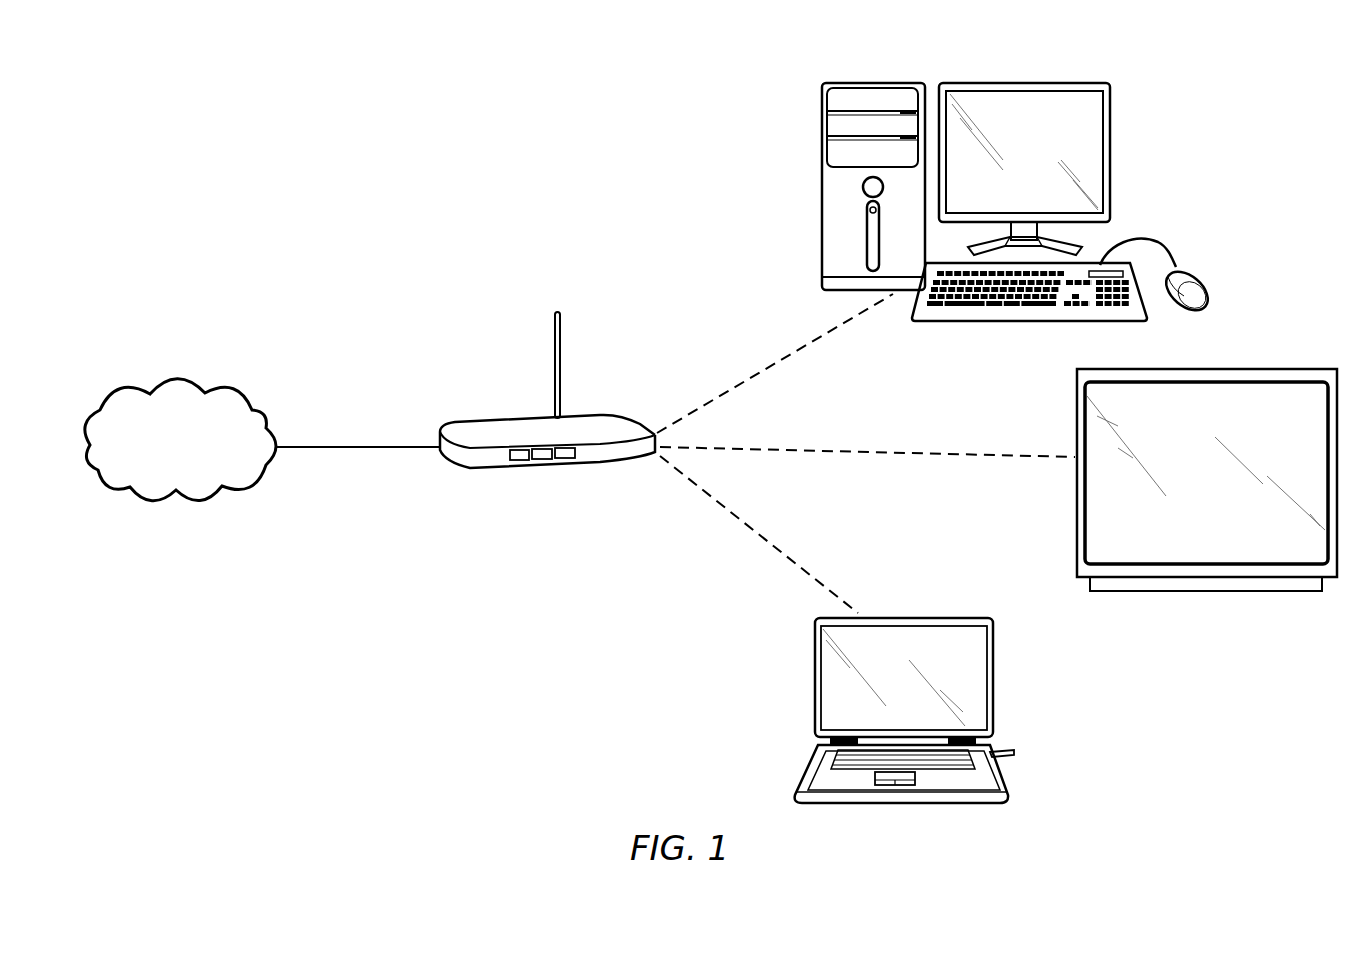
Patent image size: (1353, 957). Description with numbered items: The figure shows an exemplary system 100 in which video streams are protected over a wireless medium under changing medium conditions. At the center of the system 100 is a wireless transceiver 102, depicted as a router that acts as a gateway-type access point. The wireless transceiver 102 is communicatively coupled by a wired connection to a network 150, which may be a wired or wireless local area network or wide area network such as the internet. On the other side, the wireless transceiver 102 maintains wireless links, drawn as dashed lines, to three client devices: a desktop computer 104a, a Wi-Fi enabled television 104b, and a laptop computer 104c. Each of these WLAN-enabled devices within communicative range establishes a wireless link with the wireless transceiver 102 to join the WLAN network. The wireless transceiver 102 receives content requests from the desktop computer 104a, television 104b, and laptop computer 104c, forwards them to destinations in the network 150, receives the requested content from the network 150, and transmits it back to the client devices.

The system 100 is at (436, 160).
The network 150 is at (161, 460).
The wireless transceiver 102 is at (487, 418).
The desktop computer 104a is at (1068, 83).
The Wi-Fi enabled television 104b is at (1274, 369).
The laptop computer 104c is at (936, 618).